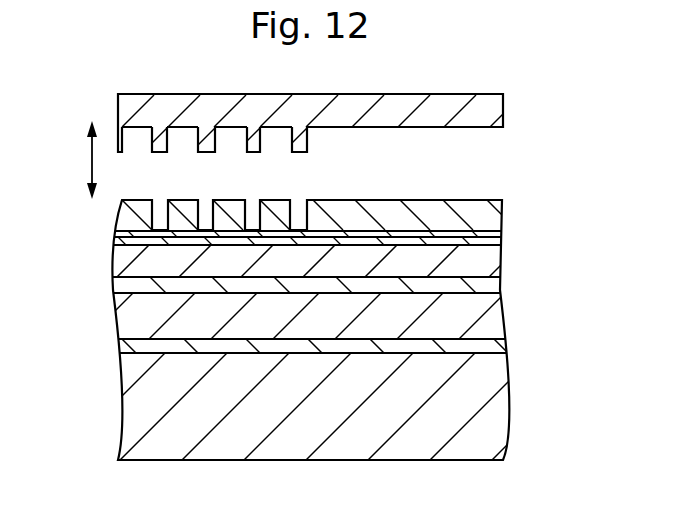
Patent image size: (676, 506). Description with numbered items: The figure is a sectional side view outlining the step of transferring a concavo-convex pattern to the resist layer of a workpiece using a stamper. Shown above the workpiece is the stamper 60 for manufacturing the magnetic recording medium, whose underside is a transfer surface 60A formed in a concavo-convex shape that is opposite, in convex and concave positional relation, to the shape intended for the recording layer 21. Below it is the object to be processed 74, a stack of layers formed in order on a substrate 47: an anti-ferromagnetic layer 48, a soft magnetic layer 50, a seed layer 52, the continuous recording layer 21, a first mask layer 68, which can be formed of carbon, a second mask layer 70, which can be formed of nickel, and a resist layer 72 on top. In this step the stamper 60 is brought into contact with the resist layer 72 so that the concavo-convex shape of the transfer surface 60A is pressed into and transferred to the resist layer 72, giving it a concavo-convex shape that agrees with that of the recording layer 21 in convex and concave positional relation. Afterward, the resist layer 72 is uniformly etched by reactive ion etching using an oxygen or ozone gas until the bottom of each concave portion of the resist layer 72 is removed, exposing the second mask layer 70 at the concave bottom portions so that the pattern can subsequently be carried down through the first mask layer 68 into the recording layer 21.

The stamper 60 is at (271, 146).
The transfer surface 60A is at (296, 153).
The resist layer 72 is at (503, 210).
The second mask layer 70 is at (501, 233).
The first mask layer 68 is at (501, 241).
The recording layer 21 is at (501, 265).
The seed layer 52 is at (501, 290).
The soft magnetic layer 50 is at (506, 318).
The anti-ferromagnetic layer 48 is at (506, 350).
The substrate 47 is at (511, 397).
The object to be processed 74 is at (342, 318).